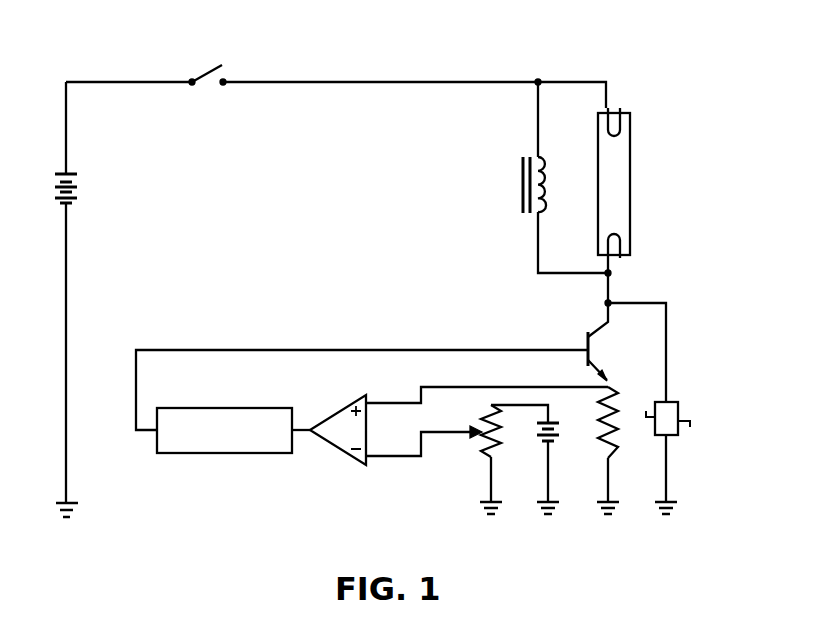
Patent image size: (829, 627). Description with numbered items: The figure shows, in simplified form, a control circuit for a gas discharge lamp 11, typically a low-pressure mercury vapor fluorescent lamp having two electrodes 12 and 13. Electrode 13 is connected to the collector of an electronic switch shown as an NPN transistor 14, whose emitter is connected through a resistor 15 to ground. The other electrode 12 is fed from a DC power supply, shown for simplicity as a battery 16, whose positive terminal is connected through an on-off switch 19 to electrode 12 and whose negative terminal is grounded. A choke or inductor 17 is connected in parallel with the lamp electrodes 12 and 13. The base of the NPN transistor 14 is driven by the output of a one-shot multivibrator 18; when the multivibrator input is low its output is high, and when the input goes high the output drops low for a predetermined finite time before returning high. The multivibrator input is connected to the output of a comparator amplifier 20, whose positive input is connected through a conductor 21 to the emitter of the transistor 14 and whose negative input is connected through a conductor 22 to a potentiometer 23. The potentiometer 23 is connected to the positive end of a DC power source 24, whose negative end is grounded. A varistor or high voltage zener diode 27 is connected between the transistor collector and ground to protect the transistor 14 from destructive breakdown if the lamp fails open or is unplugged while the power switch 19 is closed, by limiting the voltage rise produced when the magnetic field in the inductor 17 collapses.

The gas discharge lamp 11 is at (632, 193).
The electrode 12 is at (620, 110).
The electrode 13 is at (621, 258).
The NPN transistor 14 is at (586, 343).
The resistor 15 is at (600, 455).
The battery 16 is at (77, 186).
The choke or inductor 17 is at (520, 181).
The one-shot multivibrator 18 is at (222, 453).
The on-off switch 19 is at (201, 77).
The comparator amplifier 20 is at (350, 456).
The conductor 21 is at (399, 403).
The conductor 22 is at (401, 457).
The potentiometer 23 is at (487, 442).
The DC power source 24 is at (545, 437).
The varistor or high voltage zener diode 27 is at (678, 402).